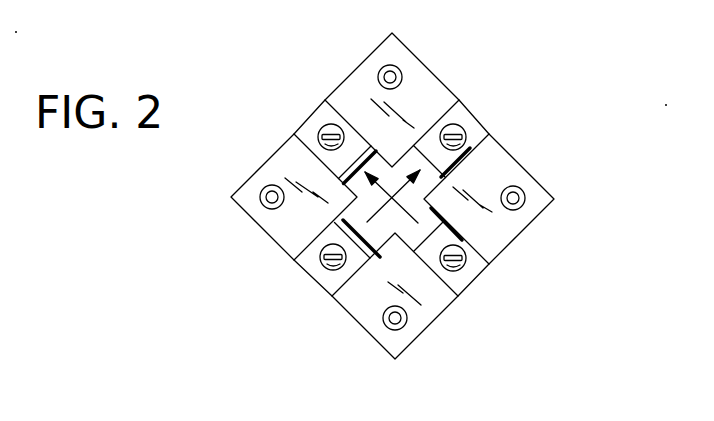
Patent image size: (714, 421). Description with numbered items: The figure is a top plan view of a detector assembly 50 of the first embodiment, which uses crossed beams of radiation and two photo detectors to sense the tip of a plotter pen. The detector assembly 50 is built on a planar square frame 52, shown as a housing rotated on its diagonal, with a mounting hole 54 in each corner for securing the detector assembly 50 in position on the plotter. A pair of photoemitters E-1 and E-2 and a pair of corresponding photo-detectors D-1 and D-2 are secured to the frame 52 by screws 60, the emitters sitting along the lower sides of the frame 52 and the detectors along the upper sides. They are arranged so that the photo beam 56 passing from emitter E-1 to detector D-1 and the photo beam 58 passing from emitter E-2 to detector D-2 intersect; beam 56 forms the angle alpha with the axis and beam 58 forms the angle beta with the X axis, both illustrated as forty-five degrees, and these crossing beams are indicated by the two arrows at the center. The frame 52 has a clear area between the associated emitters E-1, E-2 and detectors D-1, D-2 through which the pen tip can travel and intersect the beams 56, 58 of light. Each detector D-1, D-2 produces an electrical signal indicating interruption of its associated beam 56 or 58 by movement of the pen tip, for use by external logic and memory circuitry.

The detector assembly 50 is at (230, 216).
The frame 52 is at (283, 158).
The mounting holes 54 is at (381, 68).
The photo beam 56 is at (382, 215).
The photo beam 58 is at (410, 212).
The screws 60 is at (466, 137).
The photo-detector D-1 is at (367, 150).
The photo-detector D-2 is at (420, 157).
The photoemitter E-1 is at (372, 245).
The photoemitter E-2 is at (423, 238).